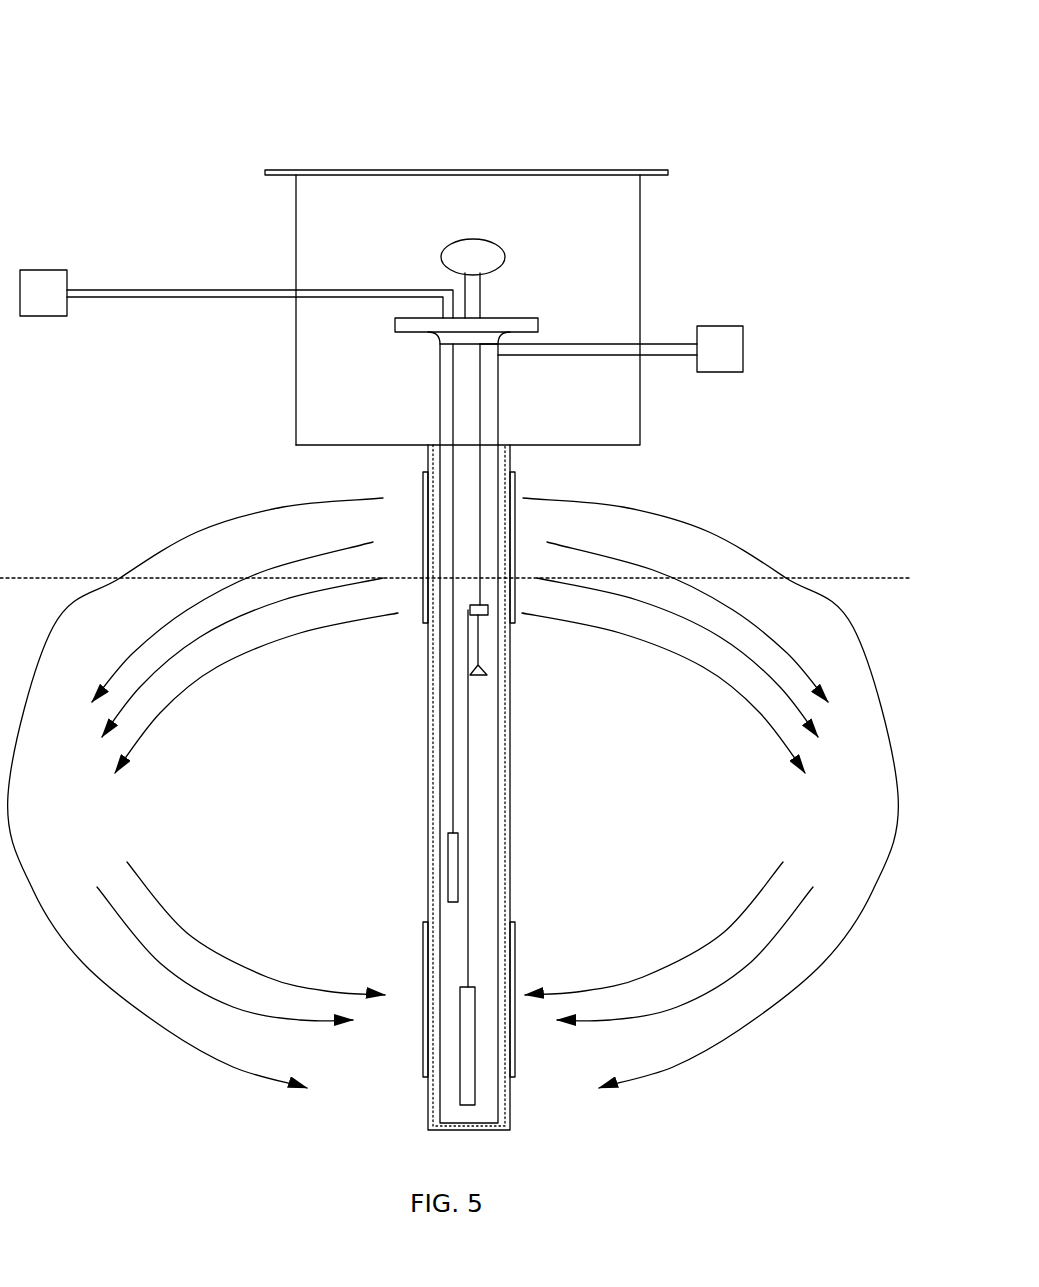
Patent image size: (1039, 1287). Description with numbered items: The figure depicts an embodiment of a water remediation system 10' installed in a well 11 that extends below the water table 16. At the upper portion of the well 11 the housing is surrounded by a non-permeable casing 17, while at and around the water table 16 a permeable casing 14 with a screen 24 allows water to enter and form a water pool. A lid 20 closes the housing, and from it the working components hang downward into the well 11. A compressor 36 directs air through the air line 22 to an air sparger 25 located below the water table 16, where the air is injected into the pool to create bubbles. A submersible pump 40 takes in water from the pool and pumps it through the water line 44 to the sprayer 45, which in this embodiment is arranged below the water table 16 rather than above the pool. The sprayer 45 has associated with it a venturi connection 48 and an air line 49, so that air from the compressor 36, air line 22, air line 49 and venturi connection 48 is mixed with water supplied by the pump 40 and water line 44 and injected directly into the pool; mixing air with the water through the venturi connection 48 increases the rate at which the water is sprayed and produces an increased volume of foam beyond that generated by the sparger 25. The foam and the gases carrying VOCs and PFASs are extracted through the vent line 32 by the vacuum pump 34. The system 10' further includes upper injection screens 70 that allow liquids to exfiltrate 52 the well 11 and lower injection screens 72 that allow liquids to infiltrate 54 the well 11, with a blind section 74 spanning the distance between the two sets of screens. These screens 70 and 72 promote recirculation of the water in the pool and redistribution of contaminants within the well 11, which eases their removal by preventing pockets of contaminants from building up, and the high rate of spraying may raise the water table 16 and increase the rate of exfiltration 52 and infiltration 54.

The water remediation system 10' is at (96, 34).
The well 11 is at (308, 155).
The permeable casing 14 is at (428, 1113).
The water table 16 is at (826, 578).
The non-permeable casing 17 is at (296, 380).
The lid 20 is at (510, 317).
The air line 22 is at (108, 290).
The screen 24 is at (515, 453).
The air sparger 25 is at (448, 888).
The vent line 32 is at (655, 344).
The vacuum pump 34 is at (743, 350).
The compressor 36 is at (38, 270).
The submersible pump 40 is at (475, 1060).
The water line 44 is at (468, 795).
The water sprayer 45 is at (487, 672).
The venturi connection 48 is at (488, 606).
The air line 49 is at (479, 533).
The exfiltrate 52 is at (185, 508).
The infiltrate 54 is at (222, 922).
The upper injection screens 70 is at (424, 490).
The lower injection screens 72 is at (520, 957).
The blind section 74 is at (517, 747).